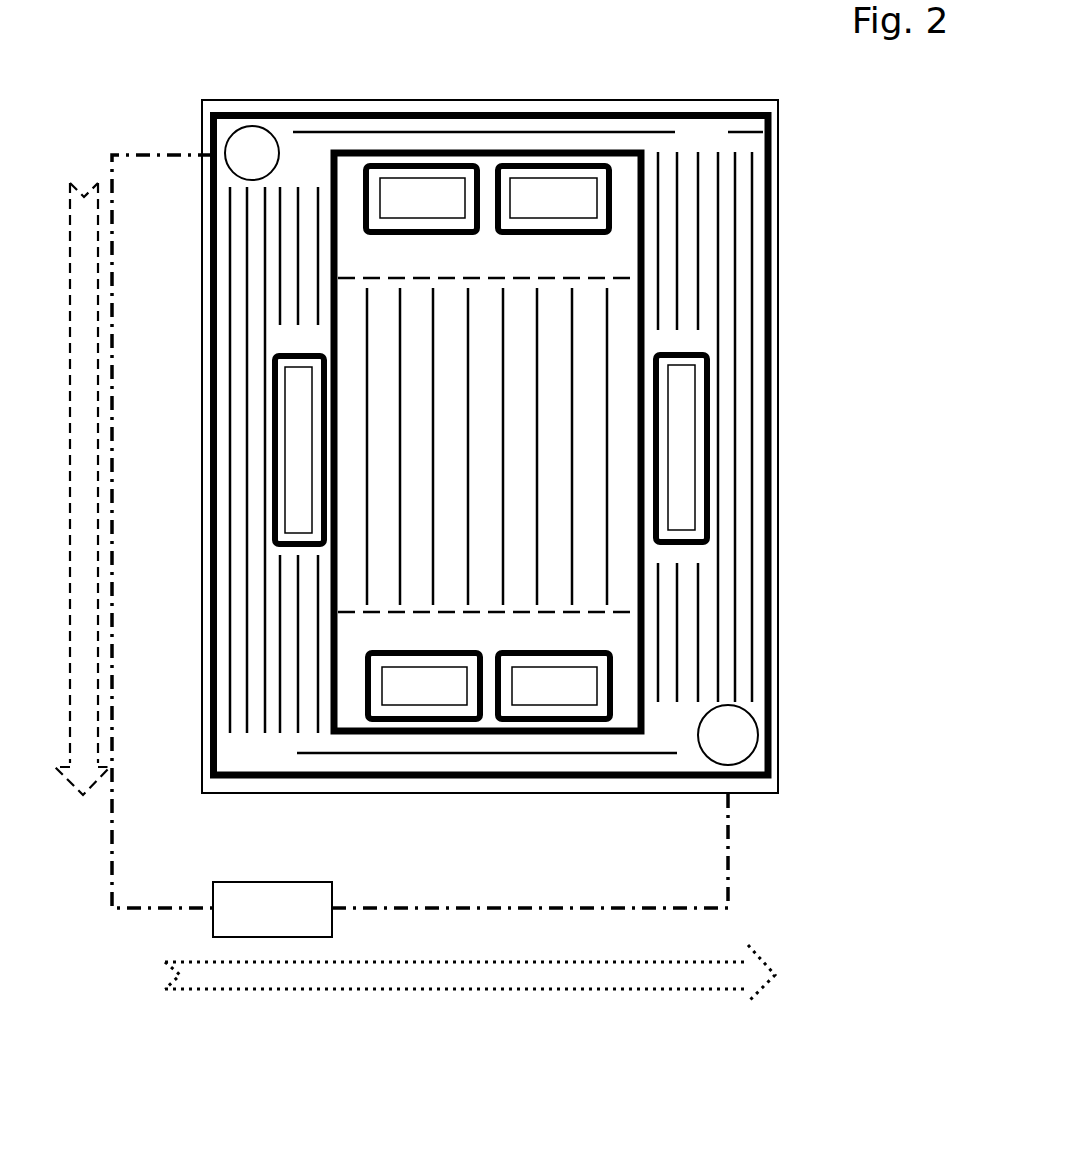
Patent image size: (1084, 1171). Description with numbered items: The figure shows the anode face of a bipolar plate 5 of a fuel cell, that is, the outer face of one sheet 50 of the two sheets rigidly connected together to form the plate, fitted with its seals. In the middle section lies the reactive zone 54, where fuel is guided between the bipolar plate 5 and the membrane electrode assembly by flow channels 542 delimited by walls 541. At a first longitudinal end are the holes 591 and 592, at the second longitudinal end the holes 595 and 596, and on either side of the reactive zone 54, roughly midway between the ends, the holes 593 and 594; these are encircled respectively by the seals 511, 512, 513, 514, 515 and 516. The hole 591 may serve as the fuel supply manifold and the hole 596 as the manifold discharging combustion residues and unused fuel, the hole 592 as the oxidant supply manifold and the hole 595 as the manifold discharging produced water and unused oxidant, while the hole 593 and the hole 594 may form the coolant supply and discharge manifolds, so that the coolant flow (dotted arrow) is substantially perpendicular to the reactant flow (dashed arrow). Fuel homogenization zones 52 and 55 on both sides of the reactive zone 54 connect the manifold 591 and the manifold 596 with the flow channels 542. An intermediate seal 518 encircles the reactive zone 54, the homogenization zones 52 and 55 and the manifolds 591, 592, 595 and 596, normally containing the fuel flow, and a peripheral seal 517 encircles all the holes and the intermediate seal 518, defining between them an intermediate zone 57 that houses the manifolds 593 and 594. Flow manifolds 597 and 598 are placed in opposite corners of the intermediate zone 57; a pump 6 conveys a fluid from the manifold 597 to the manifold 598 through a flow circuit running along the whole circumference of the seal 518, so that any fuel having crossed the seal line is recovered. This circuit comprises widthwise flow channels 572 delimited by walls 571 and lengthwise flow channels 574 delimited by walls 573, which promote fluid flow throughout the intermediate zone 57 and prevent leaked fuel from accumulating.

The bipolar plate 5 is at (790, 277).
The pump 6 is at (420, 546).
The sheet 50 is at (778, 530).
The fuel homogenization zone 52 is at (372, 263).
The reactive zone 54 is at (380, 350).
The fuel homogenization zone 55 is at (403, 633).
The intermediate zone 57 is at (728, 132).
The seal 511 is at (420, 165).
The seal 512 is at (553, 163).
The seal 513 is at (273, 452).
The seal 514 is at (710, 448).
The seal 515 is at (423, 722).
The seal 516 is at (553, 722).
The peripheral seal 517 is at (770, 445).
The intermediate seal 518 is at (327, 680).
The walls 541 is at (607, 318).
The flow channels 542 is at (353, 575).
The walls 571 is at (430, 132).
The flow channels 572 is at (477, 122).
The walls 573 is at (752, 590).
The flow channels 574 is at (755, 652).
The hole 591 is at (422, 198).
The hole 592 is at (553, 198).
The hole 593 is at (293, 477).
The hole 594 is at (682, 408).
The hole 595 is at (424, 686).
The hole 596 is at (554, 686).
The flow manifold 597 is at (232, 130).
The flow manifold 598 is at (712, 762).